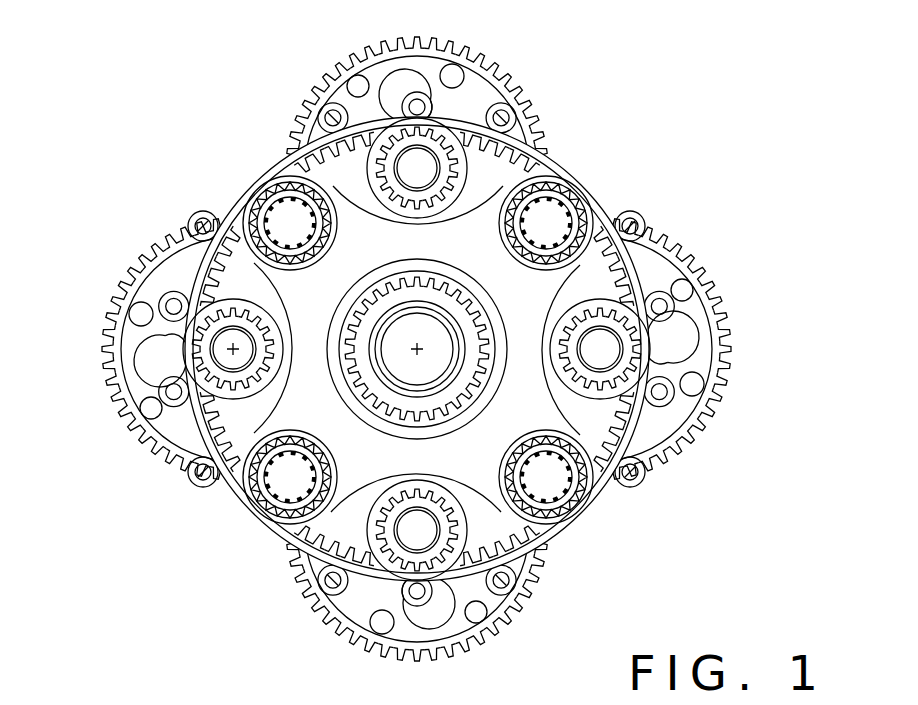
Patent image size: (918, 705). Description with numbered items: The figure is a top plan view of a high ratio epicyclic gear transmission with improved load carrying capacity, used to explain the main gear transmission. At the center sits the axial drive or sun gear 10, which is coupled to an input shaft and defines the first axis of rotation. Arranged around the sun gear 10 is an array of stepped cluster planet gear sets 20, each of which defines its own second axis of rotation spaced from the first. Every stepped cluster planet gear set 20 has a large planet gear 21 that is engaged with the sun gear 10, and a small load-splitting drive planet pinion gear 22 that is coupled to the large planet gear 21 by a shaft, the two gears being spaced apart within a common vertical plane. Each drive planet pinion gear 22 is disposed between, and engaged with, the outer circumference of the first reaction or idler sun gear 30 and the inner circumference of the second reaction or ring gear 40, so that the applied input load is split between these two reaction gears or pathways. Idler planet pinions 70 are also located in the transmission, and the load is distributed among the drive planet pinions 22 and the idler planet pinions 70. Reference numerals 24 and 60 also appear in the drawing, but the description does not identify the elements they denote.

The sun gear 10 is at (612, 495).
The stepped cluster planet gear set 20 is at (530, 70).
The large planet gear 21 is at (437, 57).
The drive planet pinion gear 22 is at (454, 150).
The gear rim 24 is at (680, 406).
The idler sun gear 30 is at (370, 163).
The ring gear 40 is at (665, 452).
The sun gear 60 is at (487, 253).
The idler planet pinion 70 is at (257, 189).